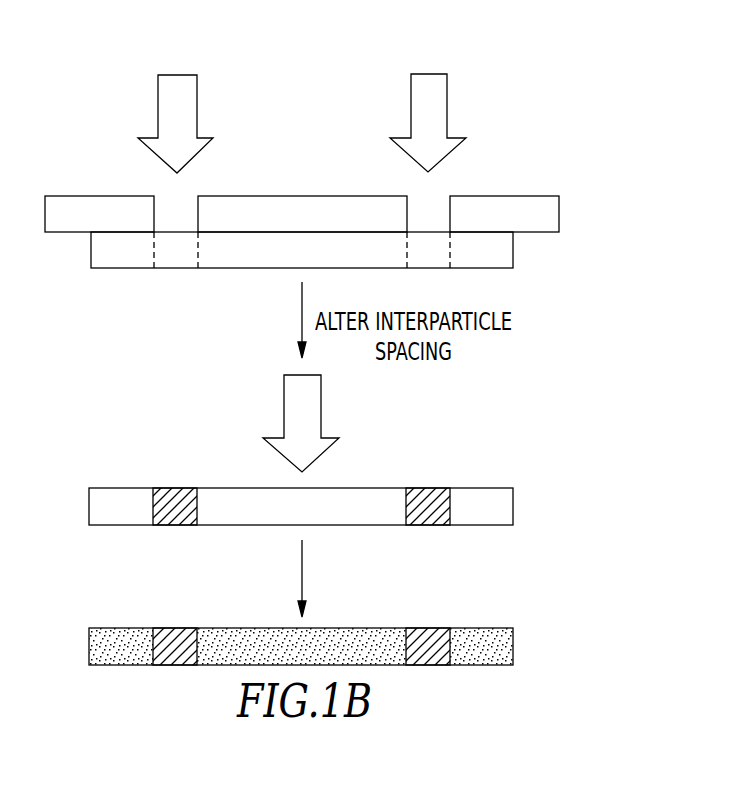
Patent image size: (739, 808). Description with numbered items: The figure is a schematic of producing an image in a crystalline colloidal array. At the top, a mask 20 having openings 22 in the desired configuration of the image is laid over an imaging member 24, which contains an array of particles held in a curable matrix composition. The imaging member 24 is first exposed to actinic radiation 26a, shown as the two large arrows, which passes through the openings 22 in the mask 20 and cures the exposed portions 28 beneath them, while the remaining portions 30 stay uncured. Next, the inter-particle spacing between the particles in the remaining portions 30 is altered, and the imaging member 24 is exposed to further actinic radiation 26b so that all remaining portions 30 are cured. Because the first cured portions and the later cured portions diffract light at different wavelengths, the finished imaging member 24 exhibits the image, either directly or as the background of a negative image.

The mask 20 is at (559, 203).
The openings 22 is at (439, 203).
The imaging member 24 is at (515, 246).
The actinic radiation 26a is at (197, 92).
The actinic radiation 26b is at (321, 407).
The exposed portions 28 is at (176, 229).
The remaining portions 30 is at (113, 256).